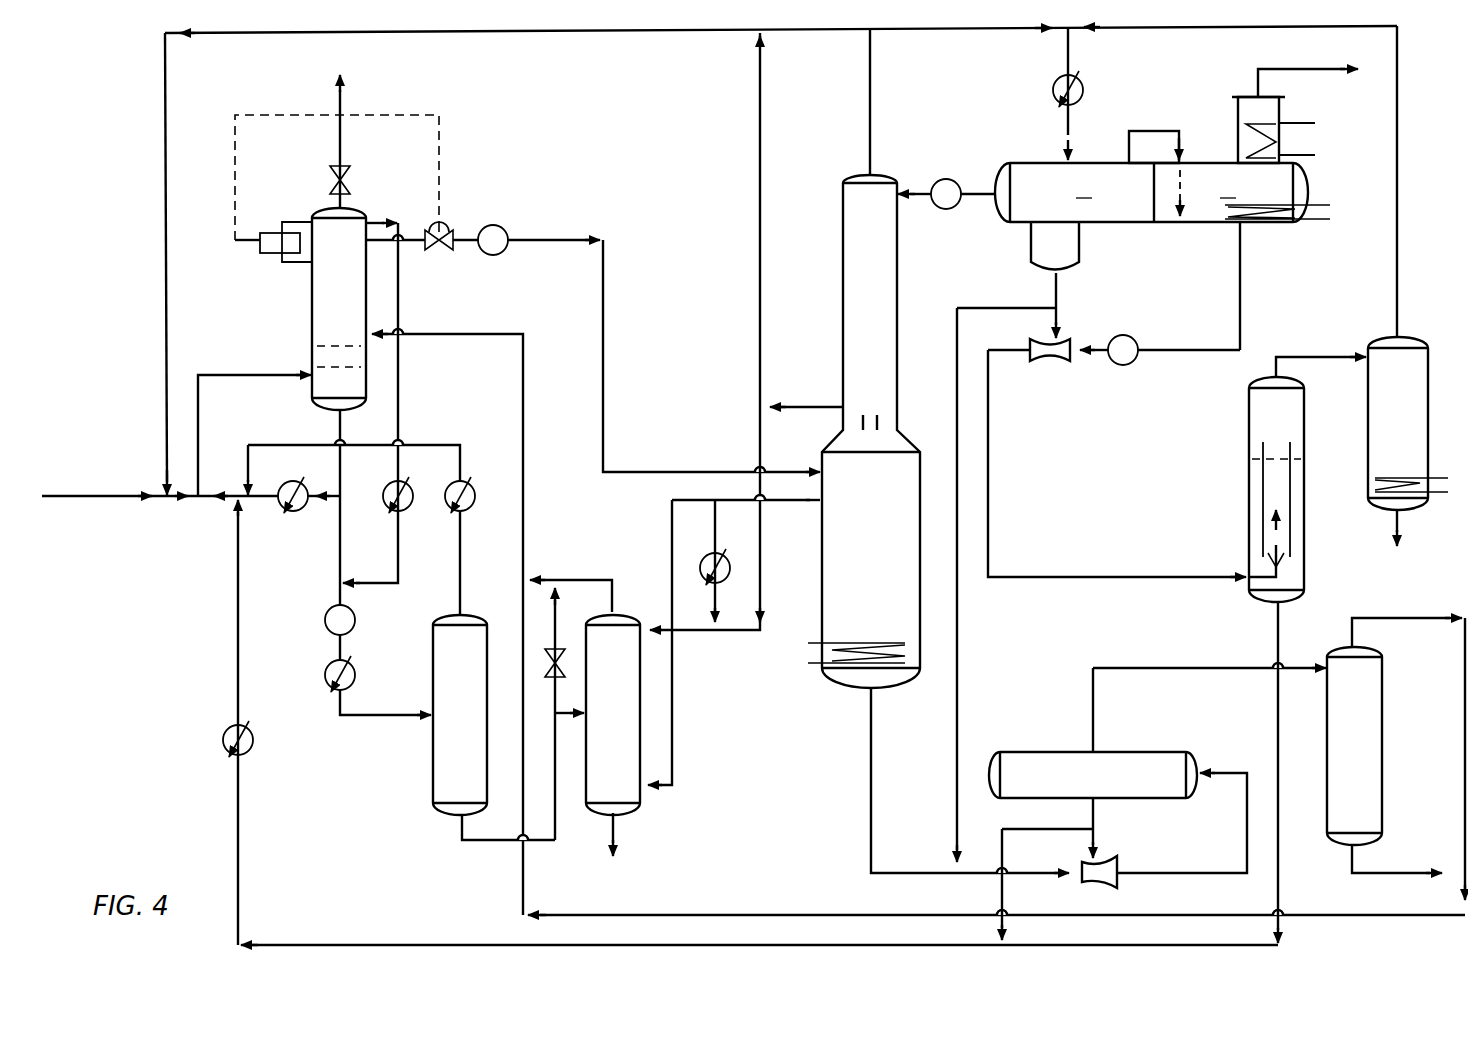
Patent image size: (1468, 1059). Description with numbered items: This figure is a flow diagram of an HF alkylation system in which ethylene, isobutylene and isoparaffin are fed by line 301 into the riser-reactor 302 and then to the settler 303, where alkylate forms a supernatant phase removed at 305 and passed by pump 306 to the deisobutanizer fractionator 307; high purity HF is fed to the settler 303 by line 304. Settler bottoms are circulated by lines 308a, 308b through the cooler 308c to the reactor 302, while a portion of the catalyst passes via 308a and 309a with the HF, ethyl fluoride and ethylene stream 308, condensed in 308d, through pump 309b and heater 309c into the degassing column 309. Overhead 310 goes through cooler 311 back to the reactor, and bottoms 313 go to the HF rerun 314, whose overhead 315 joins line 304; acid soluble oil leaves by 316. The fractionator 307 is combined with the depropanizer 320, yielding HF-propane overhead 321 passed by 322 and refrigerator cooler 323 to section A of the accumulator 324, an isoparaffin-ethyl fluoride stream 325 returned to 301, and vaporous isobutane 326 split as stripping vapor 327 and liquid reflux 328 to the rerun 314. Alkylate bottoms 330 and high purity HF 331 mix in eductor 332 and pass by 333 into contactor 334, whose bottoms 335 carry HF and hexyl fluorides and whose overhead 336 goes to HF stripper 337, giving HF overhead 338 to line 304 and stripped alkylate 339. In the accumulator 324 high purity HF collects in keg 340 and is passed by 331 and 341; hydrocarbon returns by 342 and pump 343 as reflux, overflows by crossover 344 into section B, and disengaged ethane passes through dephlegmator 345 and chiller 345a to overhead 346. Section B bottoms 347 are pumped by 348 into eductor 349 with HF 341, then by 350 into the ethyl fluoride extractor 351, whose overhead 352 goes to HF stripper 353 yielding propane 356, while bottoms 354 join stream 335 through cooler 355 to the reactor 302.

The feed line 301 is at (132, 495).
The riser-reactor 302 is at (252, 374).
The settler 303 is at (358, 251).
The high purity HF line 304 is at (474, 334).
The alkylate removal line 305 is at (607, 265).
The pump 306 is at (500, 226).
The deisobutanizer fractionator 307 is at (892, 480).
The HF, ethyl fluoride and unreacted ethylene stream 308 is at (400, 392).
The catalyst circulation line 308a is at (340, 428).
The catalyst circulation line 308b is at (327, 520).
The cooler 308c is at (292, 481).
The condenser 308d is at (383, 505).
The degassing column 309 is at (479, 653).
The catalyst line 309a is at (338, 568).
The pump 309b is at (330, 616).
The heater 309c is at (324, 674).
The degasser overhead line 310 is at (460, 587).
The cooler 311 is at (475, 500).
The degasser bottoms line 313 is at (458, 835).
The HF rerun 314 is at (632, 655).
The HF rerun overhead line 315 is at (598, 566).
The acid soluble oil removal line 316 is at (618, 838).
The depropanizer 320 is at (892, 217).
The HF-propane overhead 321 is at (870, 84).
The overhead line 322 is at (1067, 58).
The refrigerator cooler 323 is at (1053, 92).
The accumulator 324 is at (1018, 230).
The liquid isoparaffin-ethylene fluoride stream 325 is at (165, 64).
The vaporous isobutane stream 326 is at (795, 504).
The stripping vapor line 327 is at (672, 775).
The liquid reflux line 328 is at (693, 632).
The alkylate bottoms 330 is at (871, 757).
The high purity HF line 331 is at (957, 640).
The eductor 332 is at (1117, 862).
The eductor outlet line 333 is at (1247, 822).
The contactor 334 is at (1113, 782).
The contactor bottoms stream 335 is at (1000, 892).
The contactor overhead line 336 is at (1125, 658).
The HF stripper 337 is at (1372, 688).
The HF overhead 338 is at (724, 924).
The stripped alkylate outlet 339 is at (1384, 873).
The keg 340 is at (1079, 258).
The high purity HF line 341 is at (1056, 322).
The hydrocarbon reflux line 342 is at (984, 175).
The pump 343 is at (934, 178).
The crossover 344 is at (1154, 130).
The dephlegmator 345 is at (1280, 110).
The chiller 345a is at (1334, 128).
The overhead ethane 346 is at (1285, 69).
The section B bottoms 347 is at (1240, 300).
The pump 348 is at (1125, 366).
The eductor 349 is at (1062, 364).
The mixed stream line 350 is at (988, 500).
The ethyl fluoride extractor 351 is at (1294, 418).
The extractor overhead line 352 is at (1314, 356).
The HF stripper 353 is at (1418, 378).
The extractor bottoms line 354 is at (1280, 936).
The cooler 355 is at (252, 745).
The propane bottoms 356 is at (1396, 524).